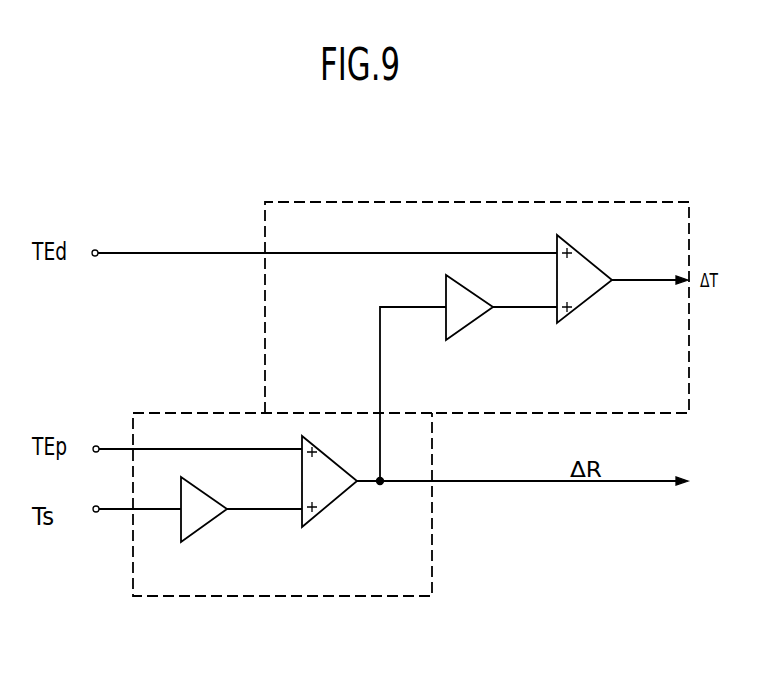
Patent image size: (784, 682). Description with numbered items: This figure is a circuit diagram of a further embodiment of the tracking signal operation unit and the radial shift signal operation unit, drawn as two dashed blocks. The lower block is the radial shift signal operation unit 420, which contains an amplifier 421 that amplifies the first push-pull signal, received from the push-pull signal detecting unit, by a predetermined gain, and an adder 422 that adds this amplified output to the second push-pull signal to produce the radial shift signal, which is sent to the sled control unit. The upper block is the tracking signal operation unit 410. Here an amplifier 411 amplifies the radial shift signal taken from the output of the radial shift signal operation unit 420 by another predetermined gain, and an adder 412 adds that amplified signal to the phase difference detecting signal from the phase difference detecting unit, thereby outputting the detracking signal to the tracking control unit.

The tracking signal operation unit 410 is at (517, 206).
The amplifier 411 is at (456, 326).
The adder 412 is at (594, 288).
The radial shift signal operation unit 420 is at (376, 590).
The amplifier 421 is at (192, 526).
The adder 422 is at (329, 490).